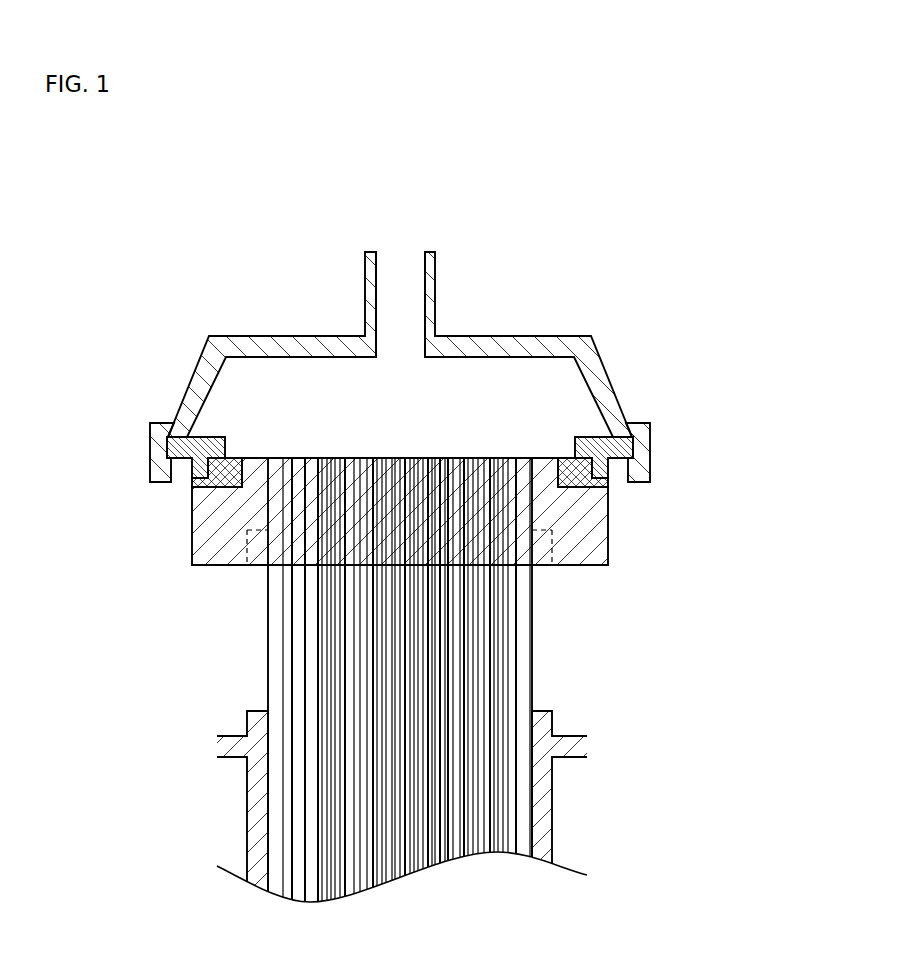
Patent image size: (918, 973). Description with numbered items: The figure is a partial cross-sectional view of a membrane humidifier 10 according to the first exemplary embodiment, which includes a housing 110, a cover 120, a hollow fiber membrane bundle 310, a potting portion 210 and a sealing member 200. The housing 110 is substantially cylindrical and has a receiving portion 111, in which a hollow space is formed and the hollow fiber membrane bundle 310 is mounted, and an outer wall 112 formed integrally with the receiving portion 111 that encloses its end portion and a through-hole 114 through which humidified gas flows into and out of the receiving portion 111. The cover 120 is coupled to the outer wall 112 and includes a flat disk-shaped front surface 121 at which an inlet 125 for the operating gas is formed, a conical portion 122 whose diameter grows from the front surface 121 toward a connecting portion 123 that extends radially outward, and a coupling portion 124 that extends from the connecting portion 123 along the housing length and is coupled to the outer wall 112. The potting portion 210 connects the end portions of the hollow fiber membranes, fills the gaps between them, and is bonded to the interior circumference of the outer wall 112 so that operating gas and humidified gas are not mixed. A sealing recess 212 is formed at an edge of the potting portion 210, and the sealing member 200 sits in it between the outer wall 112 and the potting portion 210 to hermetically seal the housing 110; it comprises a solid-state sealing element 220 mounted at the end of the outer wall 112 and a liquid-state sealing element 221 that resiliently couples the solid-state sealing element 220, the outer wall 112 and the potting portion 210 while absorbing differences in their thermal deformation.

The membrane humidifier 10 is at (103, 205).
The housing 110 is at (630, 600).
The receiving portion 111 is at (545, 812).
The outer wall 112 is at (626, 695).
The through-hole 114 is at (542, 660).
The cover 120 is at (382, 326).
The front surface 121 is at (528, 333).
The conical portion 122 is at (202, 365).
The connecting portion 123 is at (170, 427).
The coupling portion 124 is at (155, 450).
The inlet 125 is at (400, 258).
The sealing member 200 is at (426, 450).
The potting portion 210 is at (592, 540).
The sealing recess 212 is at (588, 503).
The solid-state sealing element 220 is at (590, 435).
The liquid-state sealing element 221 is at (582, 467).
The hollow fiber membrane bundle 310 is at (473, 832).